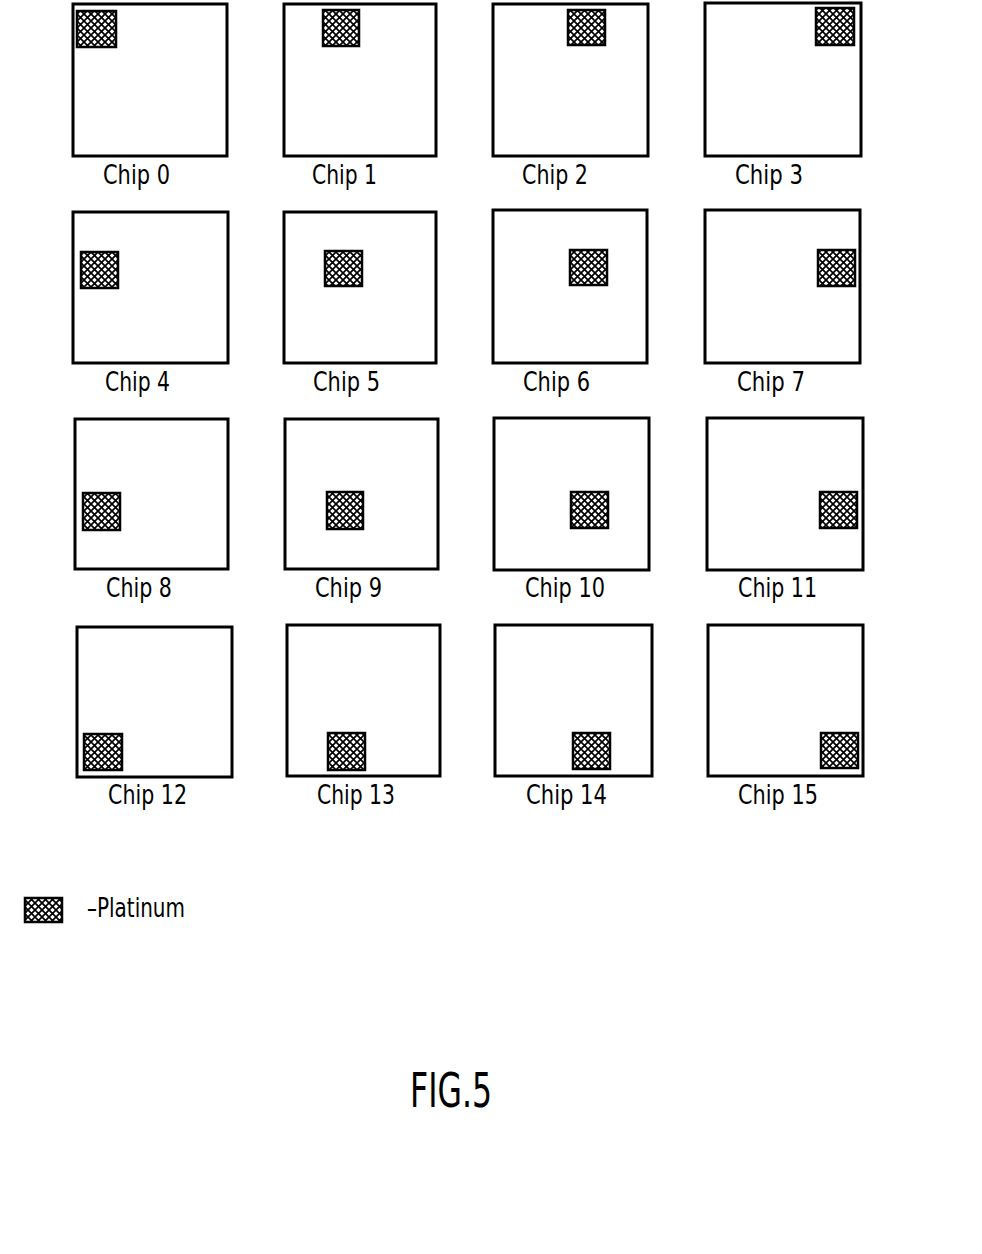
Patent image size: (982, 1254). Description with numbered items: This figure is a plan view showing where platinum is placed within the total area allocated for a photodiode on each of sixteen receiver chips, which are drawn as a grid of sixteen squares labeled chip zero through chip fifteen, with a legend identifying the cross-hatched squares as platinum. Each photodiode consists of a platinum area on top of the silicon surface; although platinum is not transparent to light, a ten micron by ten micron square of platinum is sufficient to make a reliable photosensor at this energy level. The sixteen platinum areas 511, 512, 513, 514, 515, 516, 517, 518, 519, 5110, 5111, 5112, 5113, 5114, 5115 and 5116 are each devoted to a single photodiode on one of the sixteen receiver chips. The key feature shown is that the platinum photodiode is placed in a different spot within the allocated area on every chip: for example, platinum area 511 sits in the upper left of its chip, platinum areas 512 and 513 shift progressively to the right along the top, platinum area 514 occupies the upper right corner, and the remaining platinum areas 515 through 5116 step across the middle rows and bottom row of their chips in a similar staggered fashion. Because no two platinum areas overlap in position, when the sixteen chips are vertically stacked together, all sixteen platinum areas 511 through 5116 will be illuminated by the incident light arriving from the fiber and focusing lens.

The platinum area 511 is at (110, 47).
The platinum area 512 is at (348, 46).
The platinum area 513 is at (577, 45).
The platinum area 514 is at (816, 42).
The platinum area 515 is at (118, 267).
The platinum area 516 is at (356, 287).
The platinum area 517 is at (572, 286).
The platinum area 518 is at (818, 274).
The platinum area 519 is at (100, 493).
The platinum area 5110 is at (340, 492).
The platinum area 5111 is at (571, 493).
The platinum area 5112 is at (820, 505).
The platinum area 5113 is at (97, 734).
The platinum area 5114 is at (342, 733).
The platinum area 5115 is at (578, 733).
The platinum area 5116 is at (821, 745).